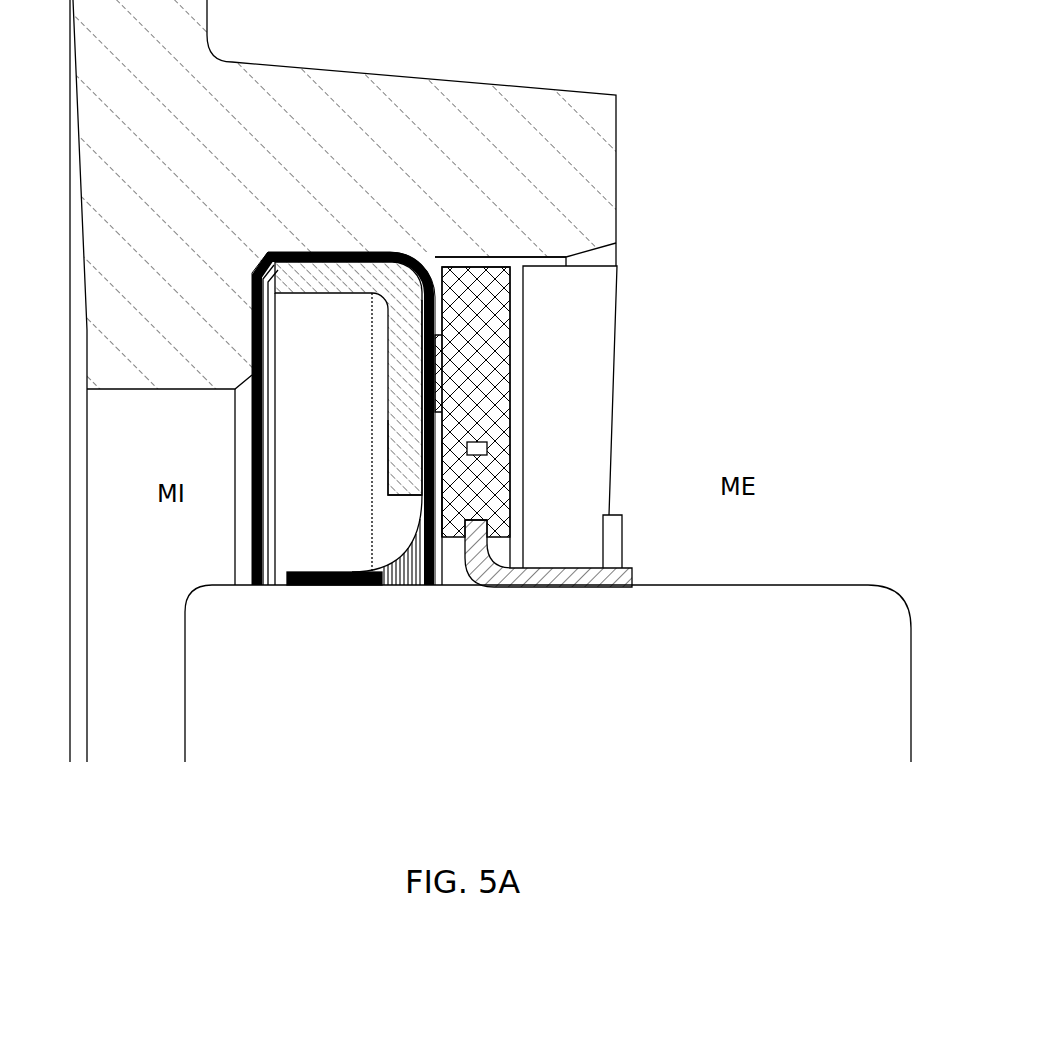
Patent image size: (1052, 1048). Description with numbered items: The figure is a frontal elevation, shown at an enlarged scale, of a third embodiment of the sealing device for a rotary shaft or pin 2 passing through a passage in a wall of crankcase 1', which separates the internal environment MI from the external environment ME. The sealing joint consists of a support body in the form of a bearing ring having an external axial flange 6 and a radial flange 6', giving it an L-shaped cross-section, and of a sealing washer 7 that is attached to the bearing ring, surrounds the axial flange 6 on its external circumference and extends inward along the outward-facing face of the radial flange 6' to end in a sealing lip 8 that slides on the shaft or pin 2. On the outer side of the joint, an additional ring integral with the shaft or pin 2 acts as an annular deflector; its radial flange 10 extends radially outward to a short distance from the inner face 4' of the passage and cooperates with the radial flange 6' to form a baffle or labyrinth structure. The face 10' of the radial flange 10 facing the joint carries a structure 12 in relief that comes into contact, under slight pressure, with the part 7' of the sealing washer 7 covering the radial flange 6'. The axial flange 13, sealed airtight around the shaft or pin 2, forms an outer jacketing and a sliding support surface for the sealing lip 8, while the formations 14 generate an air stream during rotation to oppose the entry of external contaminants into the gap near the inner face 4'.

The wall of crankcase 1' is at (373, 381).
The rotary shaft or pin 2 is at (808, 592).
The inner face of the passage 4' is at (516, 151).
The external axial flange 6 is at (348, 298).
The radial flange 6' is at (221, 504).
The sealing washer 7 is at (375, 306).
The part of the sealing washer covering the radial flange 7' is at (226, 397).
The sealing lip 8 is at (312, 578).
The radial flange of the additional ring 10 is at (564, 426).
The face of the radial flange 10' is at (559, 488).
The structure in relief 12 is at (440, 398).
The axial flange 13 is at (600, 580).
The formations 14 is at (595, 292).